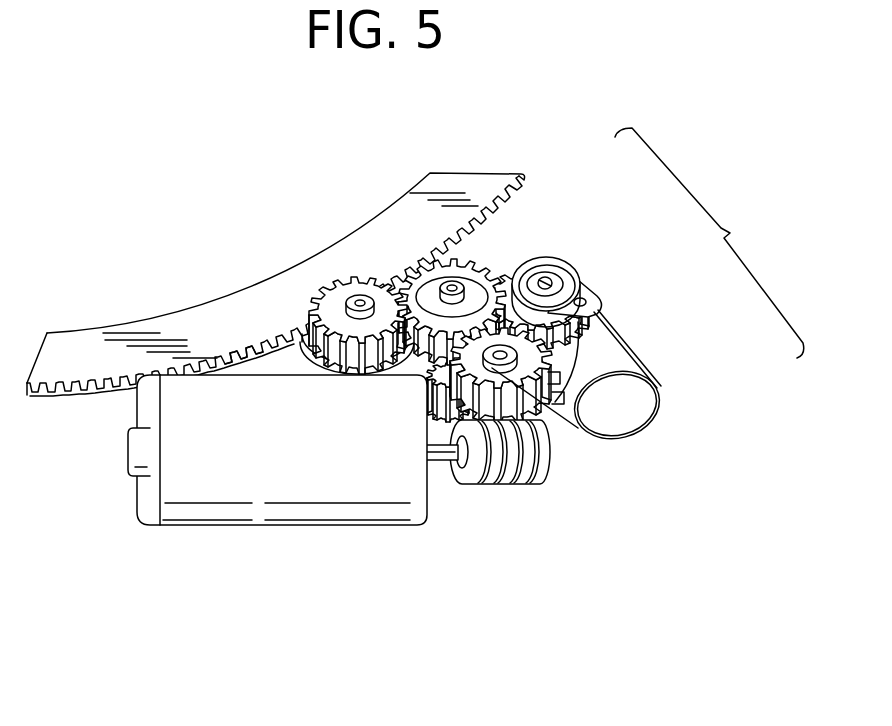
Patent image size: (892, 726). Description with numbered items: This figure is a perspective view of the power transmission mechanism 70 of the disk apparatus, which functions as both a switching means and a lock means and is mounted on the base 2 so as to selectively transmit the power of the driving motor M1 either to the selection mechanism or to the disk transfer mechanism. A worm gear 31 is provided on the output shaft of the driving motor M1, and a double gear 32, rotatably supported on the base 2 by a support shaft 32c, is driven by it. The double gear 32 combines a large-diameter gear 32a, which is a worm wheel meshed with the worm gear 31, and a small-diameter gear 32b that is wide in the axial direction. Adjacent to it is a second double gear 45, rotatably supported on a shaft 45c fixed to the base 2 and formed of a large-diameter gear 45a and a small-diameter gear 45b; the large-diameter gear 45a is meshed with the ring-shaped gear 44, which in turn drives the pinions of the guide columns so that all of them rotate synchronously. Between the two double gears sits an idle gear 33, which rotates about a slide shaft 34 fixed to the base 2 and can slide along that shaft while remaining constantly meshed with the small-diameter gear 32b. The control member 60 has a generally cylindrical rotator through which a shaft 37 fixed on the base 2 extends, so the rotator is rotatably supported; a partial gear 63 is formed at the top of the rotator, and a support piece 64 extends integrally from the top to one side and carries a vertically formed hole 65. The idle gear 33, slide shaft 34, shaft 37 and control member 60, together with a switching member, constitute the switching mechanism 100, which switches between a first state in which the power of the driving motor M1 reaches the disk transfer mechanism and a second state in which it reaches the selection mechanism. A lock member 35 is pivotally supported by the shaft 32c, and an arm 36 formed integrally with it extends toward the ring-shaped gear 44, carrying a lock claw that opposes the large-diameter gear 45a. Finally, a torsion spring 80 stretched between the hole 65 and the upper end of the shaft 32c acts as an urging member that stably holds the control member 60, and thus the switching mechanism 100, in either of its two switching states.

The base 2 is at (90, 458).
The worm gear 31 is at (503, 487).
The double gear 32 is at (502, 334).
The large-diameter gear 32a is at (458, 468).
The small-diameter gear 32b is at (448, 422).
The support shaft 32c is at (465, 378).
The idle gear 33 is at (477, 263).
The slide shaft 34 is at (457, 286).
The lock member 35 is at (600, 378).
The arm 36 is at (384, 272).
The shaft 37 is at (578, 272).
The ring-shaped gear 44 is at (415, 205).
The double gear 45 is at (316, 299).
The large-diameter gear 45a is at (253, 355).
The small-diameter gear 45b is at (313, 317).
The shaft 45c is at (353, 302).
The control member 60 is at (603, 295).
The partial gear 63 is at (545, 283).
The support piece 64 is at (556, 337).
The hole 65 is at (592, 300).
The power transmission mechanism 70 is at (709, 243).
The torsion spring 80 is at (652, 378).
The switching mechanism 100 is at (620, 372).
The driving motor M1 is at (260, 487).